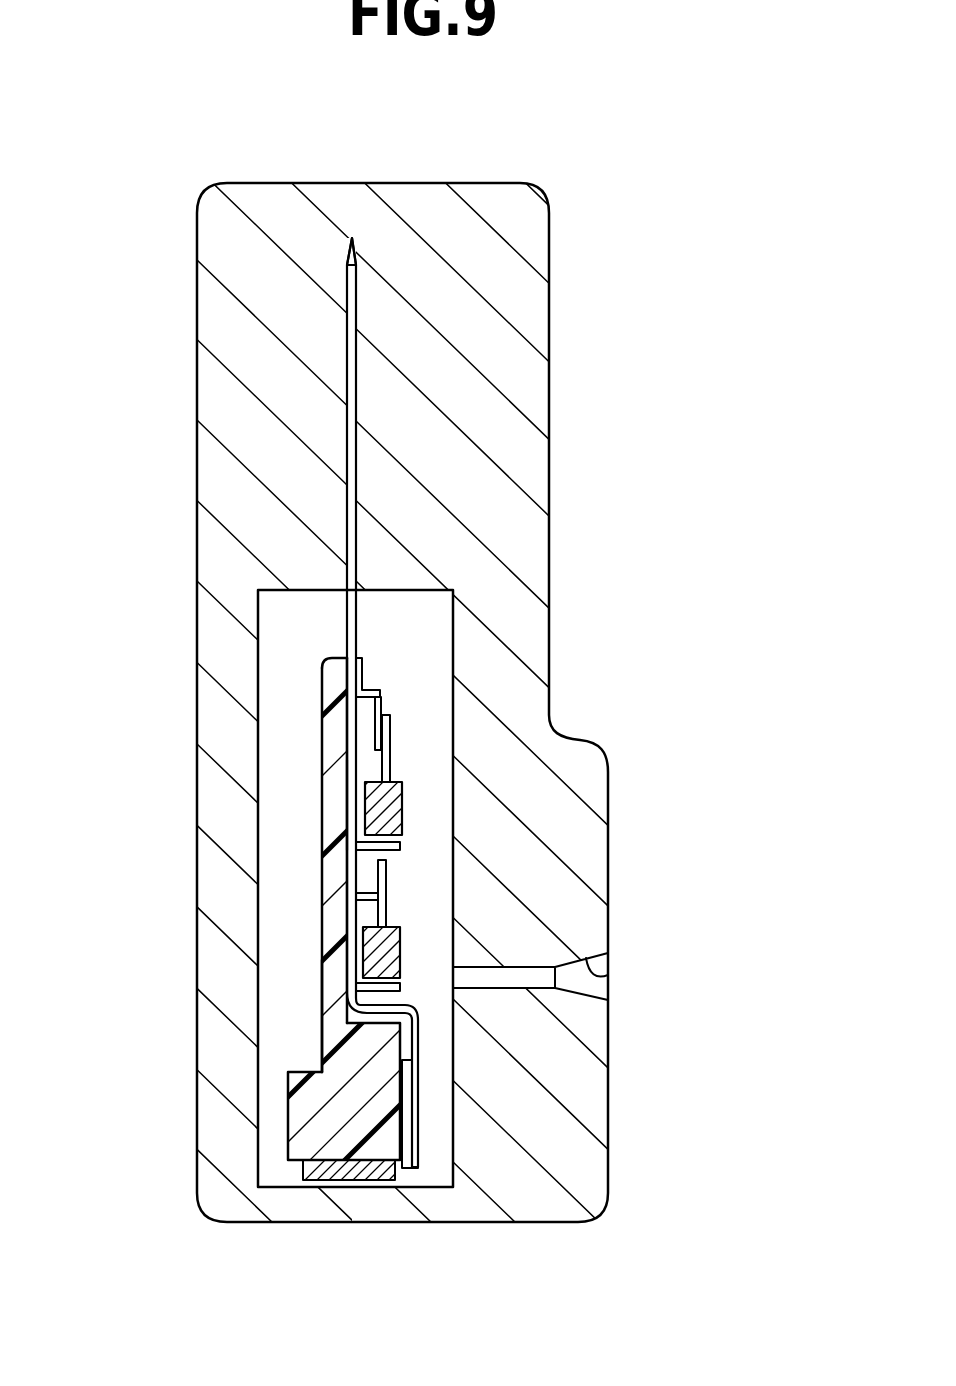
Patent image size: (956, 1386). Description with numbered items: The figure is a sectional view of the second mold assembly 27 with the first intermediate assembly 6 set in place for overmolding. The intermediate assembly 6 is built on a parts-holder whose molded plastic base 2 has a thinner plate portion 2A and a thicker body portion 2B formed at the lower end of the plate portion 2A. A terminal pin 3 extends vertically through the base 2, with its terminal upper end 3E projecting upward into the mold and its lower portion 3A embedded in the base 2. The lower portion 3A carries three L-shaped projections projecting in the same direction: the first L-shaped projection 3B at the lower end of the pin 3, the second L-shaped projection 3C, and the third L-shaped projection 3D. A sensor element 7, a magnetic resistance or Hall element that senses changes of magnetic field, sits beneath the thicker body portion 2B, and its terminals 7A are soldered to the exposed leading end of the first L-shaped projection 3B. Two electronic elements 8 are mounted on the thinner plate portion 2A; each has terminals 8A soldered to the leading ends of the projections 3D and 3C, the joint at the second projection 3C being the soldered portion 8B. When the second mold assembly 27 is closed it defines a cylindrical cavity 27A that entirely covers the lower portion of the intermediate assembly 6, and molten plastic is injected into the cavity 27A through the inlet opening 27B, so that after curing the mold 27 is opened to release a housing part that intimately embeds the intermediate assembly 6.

The second mold assembly 27 is at (575, 293).
The cylindrical cavity 27A is at (258, 977).
The inlet opening 27B is at (608, 972).
The terminal pin 3 is at (347, 500).
The terminal upper end 3E is at (347, 355).
The lower portion 3A is at (352, 805).
The first L-shaped projection 3B is at (417, 1018).
The second L-shaped projection 3C is at (373, 868).
The third L-shaped projection 3D is at (380, 692).
The plastic base 2 is at (337, 740).
The thinner plate portion 2A is at (333, 1003).
The thicker body portion 2B is at (310, 1123).
The intermediate assembly 6 is at (302, 676).
The electronic element 8 is at (390, 812).
The terminal 8A is at (392, 765).
The soldered portion 8B is at (385, 735).
The sensor element 7 is at (335, 1181).
The terminal 7A is at (420, 1130).